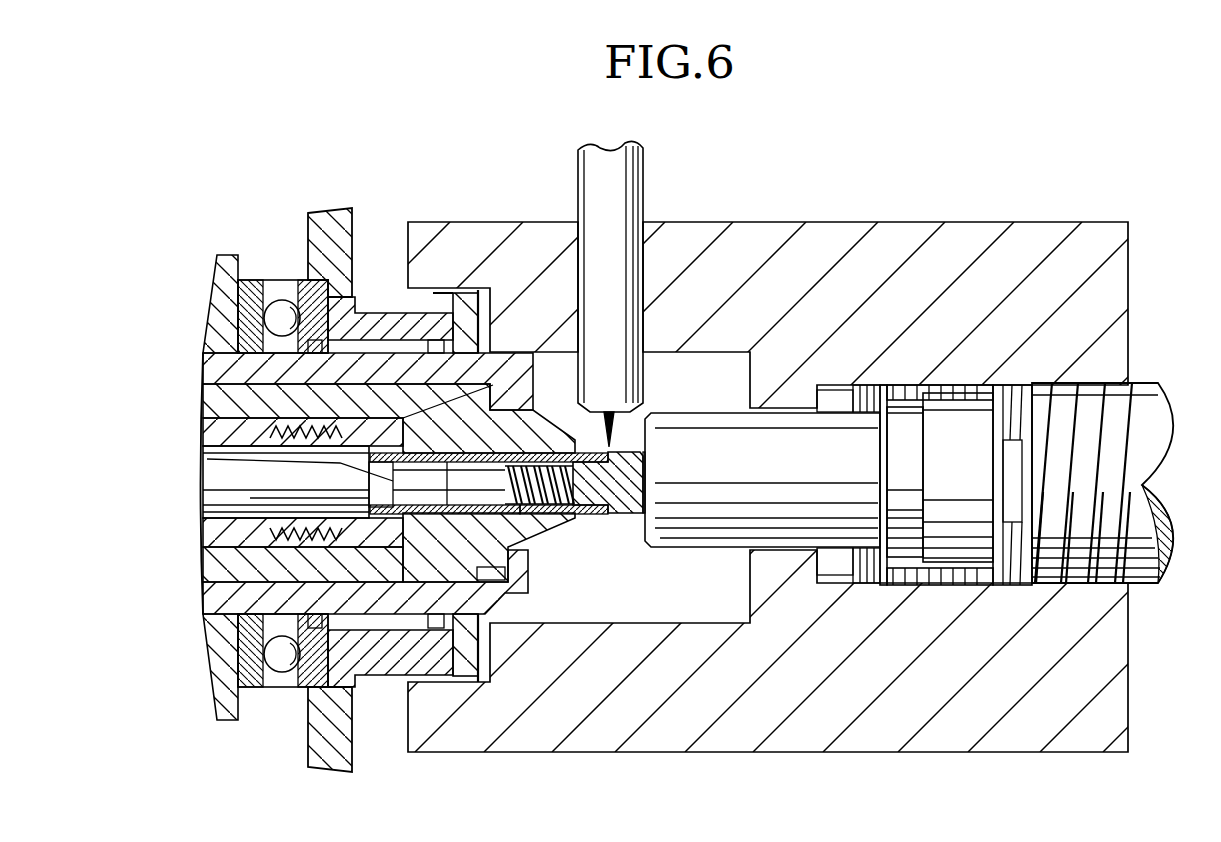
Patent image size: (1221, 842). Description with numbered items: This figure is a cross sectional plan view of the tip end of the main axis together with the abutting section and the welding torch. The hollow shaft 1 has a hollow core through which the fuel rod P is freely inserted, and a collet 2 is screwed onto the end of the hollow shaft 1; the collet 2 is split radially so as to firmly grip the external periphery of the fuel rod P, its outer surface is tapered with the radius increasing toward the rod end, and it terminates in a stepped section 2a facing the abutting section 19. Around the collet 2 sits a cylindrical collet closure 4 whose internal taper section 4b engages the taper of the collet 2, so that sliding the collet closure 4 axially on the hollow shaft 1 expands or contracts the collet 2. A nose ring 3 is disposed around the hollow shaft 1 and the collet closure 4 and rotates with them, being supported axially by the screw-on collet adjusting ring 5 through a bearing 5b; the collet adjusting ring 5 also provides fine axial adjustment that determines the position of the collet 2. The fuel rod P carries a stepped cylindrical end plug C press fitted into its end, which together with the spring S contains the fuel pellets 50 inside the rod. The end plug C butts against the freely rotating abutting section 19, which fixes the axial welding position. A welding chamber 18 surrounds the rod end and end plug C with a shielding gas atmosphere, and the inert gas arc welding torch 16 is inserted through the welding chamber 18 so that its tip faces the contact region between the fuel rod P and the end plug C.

The hollow shaft 1 is at (222, 483).
The collet 2 is at (527, 405).
The stepped section 2a is at (552, 540).
The nose ring 3 is at (503, 352).
The collet closure 4 is at (405, 392).
The taper section 4b is at (488, 575).
The collet adjusting ring 5 is at (318, 212).
The bearing 5b is at (378, 296).
The inert gas arc welding torch 16 is at (647, 172).
The welding chamber 18 is at (917, 232).
The abutting section 19 is at (790, 413).
The fuel pellets 50 is at (330, 468).
The spring S is at (550, 452).
The fuel rod P is at (588, 517).
The end plug C is at (636, 517).